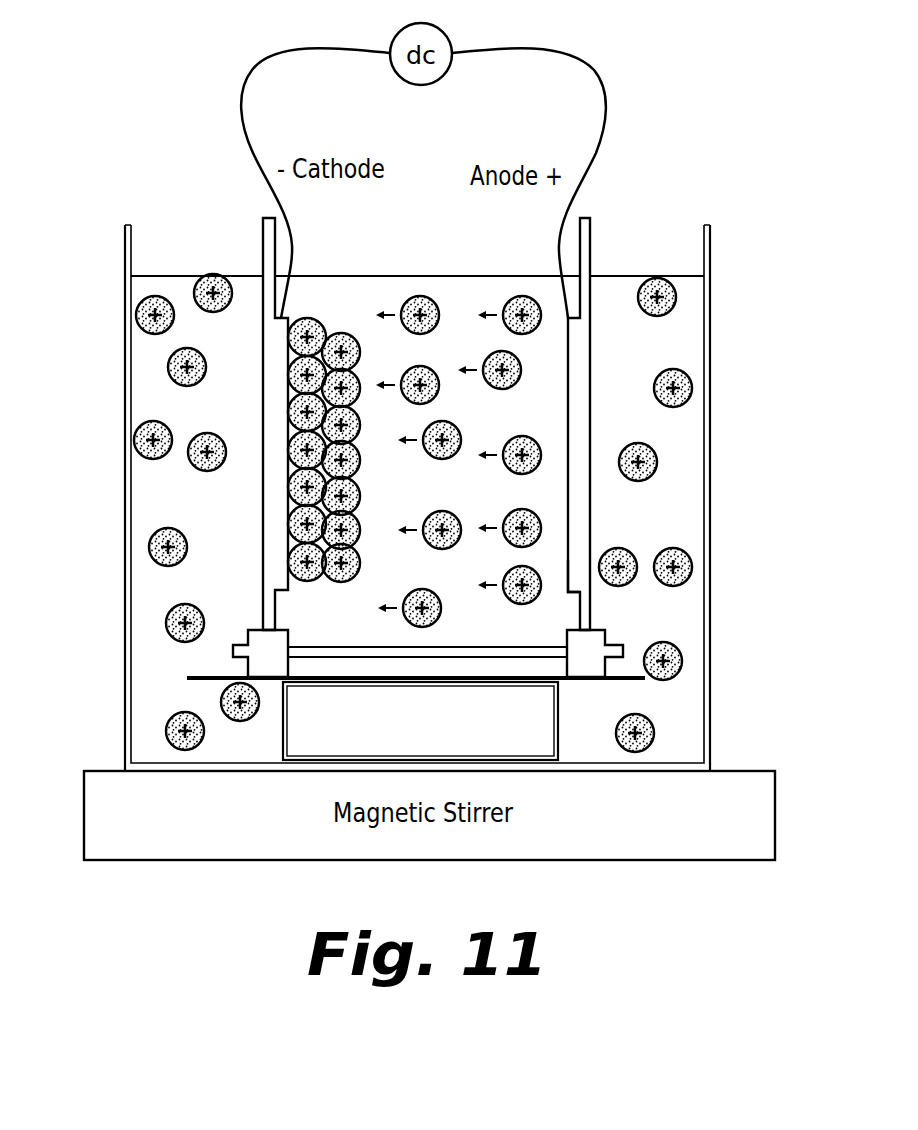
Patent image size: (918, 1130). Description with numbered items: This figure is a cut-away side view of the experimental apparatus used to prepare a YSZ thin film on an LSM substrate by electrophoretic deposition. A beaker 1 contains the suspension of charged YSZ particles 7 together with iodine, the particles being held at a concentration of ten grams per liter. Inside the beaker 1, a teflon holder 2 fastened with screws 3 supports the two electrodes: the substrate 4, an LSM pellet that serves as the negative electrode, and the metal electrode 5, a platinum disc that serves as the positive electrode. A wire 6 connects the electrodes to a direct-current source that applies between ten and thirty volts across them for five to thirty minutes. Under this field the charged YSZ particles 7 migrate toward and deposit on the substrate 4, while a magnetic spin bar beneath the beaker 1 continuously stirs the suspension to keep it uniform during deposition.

The beaker 1 is at (716, 297).
The teflon holder 2 is at (596, 246).
The screws 3 is at (240, 663).
The substrate (LSM pellet) 4 is at (293, 592).
The metal electrode (Pt disc) 5 is at (562, 597).
The wire 6 is at (258, 167).
The charged YSZ particles 7 is at (147, 530).